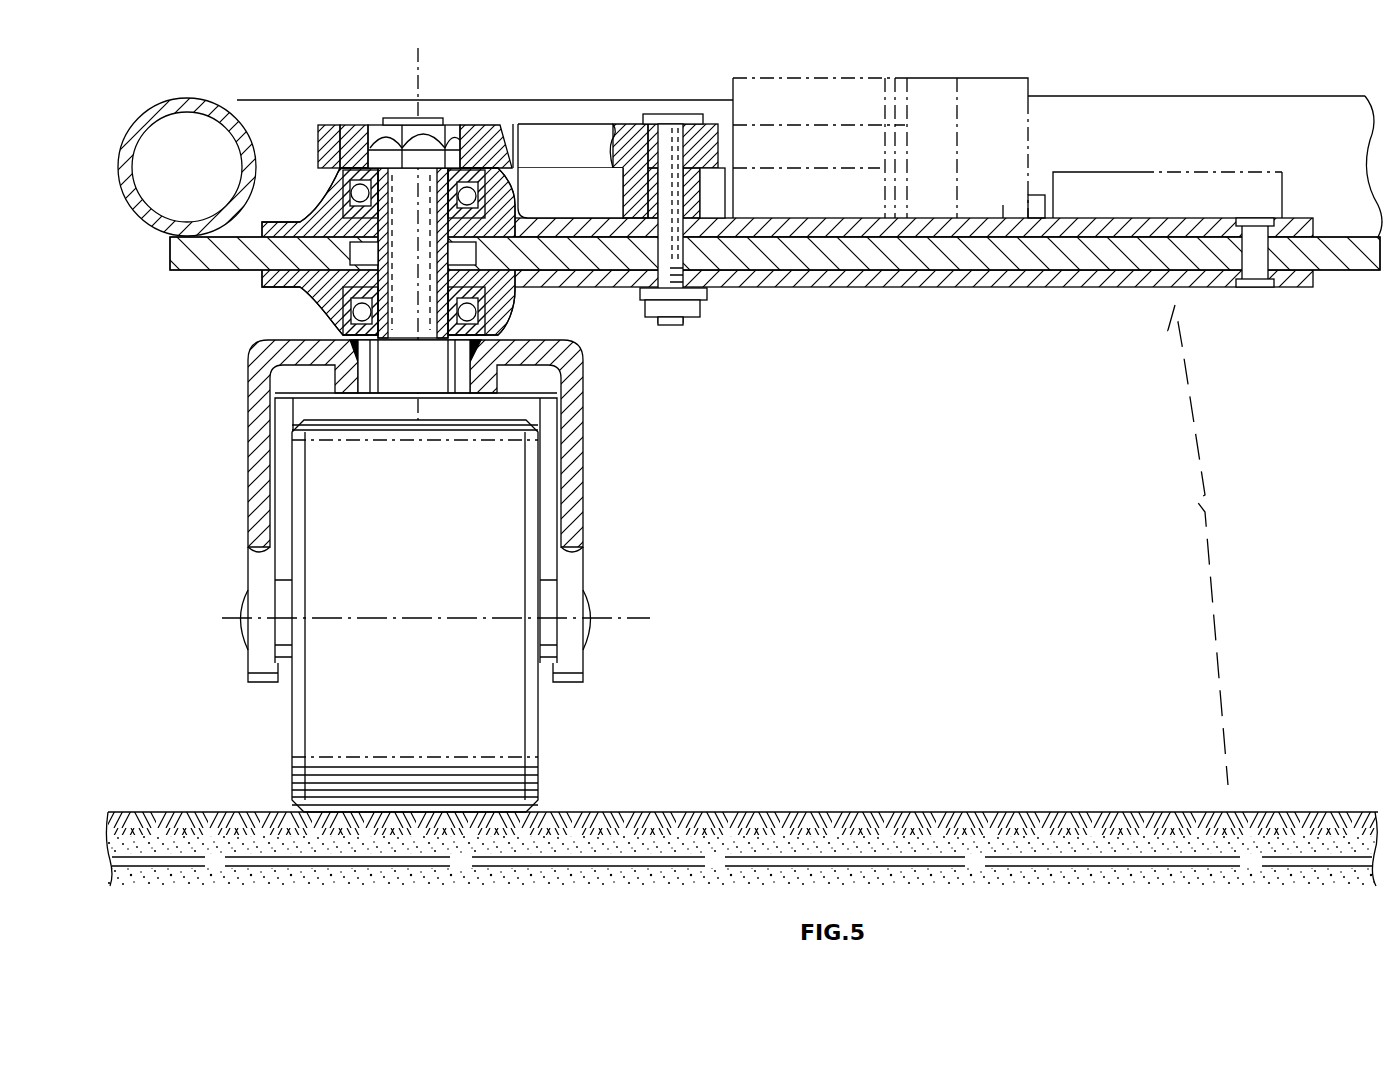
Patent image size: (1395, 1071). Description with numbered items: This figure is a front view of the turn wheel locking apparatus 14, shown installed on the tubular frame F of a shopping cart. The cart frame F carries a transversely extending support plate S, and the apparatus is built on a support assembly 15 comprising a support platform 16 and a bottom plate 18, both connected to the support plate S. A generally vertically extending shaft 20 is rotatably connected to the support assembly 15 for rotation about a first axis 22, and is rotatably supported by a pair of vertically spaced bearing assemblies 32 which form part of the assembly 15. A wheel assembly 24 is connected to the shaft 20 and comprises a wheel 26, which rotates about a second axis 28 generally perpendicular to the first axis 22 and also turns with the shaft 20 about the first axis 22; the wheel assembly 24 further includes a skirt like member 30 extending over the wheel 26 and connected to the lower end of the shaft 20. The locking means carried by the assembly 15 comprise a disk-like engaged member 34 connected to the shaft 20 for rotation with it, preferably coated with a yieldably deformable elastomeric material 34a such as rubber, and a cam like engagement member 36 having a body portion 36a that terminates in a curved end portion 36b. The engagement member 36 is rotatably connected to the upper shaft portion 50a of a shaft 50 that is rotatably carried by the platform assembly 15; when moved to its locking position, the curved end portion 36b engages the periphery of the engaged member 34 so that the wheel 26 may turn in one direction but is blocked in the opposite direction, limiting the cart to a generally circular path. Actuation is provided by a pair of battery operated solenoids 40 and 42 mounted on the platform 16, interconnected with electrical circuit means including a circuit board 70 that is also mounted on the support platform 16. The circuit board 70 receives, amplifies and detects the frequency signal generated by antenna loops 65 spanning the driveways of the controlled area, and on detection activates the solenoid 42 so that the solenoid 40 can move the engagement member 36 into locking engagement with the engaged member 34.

The turn wheel locking apparatus 14 is at (795, 360).
The support assembly 15 is at (258, 288).
The support platform 16 is at (1003, 218).
The bottom plate 18 is at (857, 287).
The shaft 20 is at (428, 267).
The first axis 22 is at (420, 60).
The wheel assembly 24 is at (586, 438).
The wheel 26 is at (540, 742).
The second axis 28 is at (638, 617).
The skirt like member 30 is at (585, 497).
The bearing assemblies 32 is at (352, 191).
The engaged member 34 is at (352, 125).
The yieldably deformable elastomeric material 34a is at (318, 130).
The engagement member 36 is at (606, 116).
The body portion 36a is at (606, 148).
The curved end portion 36b is at (522, 140).
The solenoid 40 is at (833, 78).
The solenoid 42 is at (1010, 78).
The shaft 50 is at (673, 248).
The upper shaft portion 50a is at (693, 156).
The antenna loops 65 is at (1025, 862).
The circuit board 70 is at (1218, 192).
The tubular frame F is at (238, 104).
The support plate S is at (1083, 252).